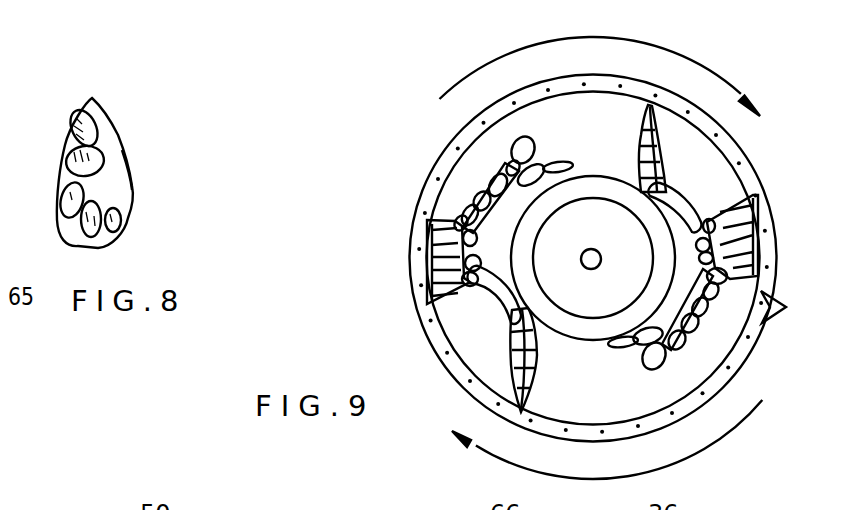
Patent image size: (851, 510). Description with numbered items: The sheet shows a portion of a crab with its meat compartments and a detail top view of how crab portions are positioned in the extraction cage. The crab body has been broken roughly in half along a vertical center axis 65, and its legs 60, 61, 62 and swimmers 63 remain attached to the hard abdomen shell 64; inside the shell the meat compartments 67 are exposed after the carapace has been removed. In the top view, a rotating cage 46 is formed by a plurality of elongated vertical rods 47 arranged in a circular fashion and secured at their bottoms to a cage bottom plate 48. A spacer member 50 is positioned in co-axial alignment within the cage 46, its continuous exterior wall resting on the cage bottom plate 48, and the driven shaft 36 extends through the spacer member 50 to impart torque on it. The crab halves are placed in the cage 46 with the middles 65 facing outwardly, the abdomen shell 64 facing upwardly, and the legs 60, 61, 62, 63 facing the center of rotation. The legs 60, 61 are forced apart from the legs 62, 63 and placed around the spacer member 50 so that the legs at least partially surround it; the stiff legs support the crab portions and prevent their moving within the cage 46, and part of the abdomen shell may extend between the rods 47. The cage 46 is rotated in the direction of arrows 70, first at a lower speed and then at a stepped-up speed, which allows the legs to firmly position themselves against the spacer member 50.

In FIG. 9, the driven shaft 36 is at (590, 249).
In FIG. 9, the rotating cage 46 is at (757, 172).
In FIG. 9, the elongated vertical rods 47 is at (787, 307).
In FIG. 9, the cage bottom plate 48 is at (462, 187).
In FIG. 9, the spacer member 50 is at (590, 186).
In FIG. 9, the leg 60 is at (495, 305).
In FIG. 9, the leg 61 is at (538, 350).
In FIG. 9, the leg 62 is at (550, 157).
In FIG. 9, the swimmer 63 is at (512, 140).
In FIG. 8, the abdomen shell 64 is at (63, 185).
In FIG. 8, the vertical center axis 65 is at (133, 188).
In FIG. 9, the vertical center axis 65 is at (428, 250).
In FIG. 8, the meat compartments 67 is at (84, 157).
In FIG. 9, the arrows 70 is at (718, 78).